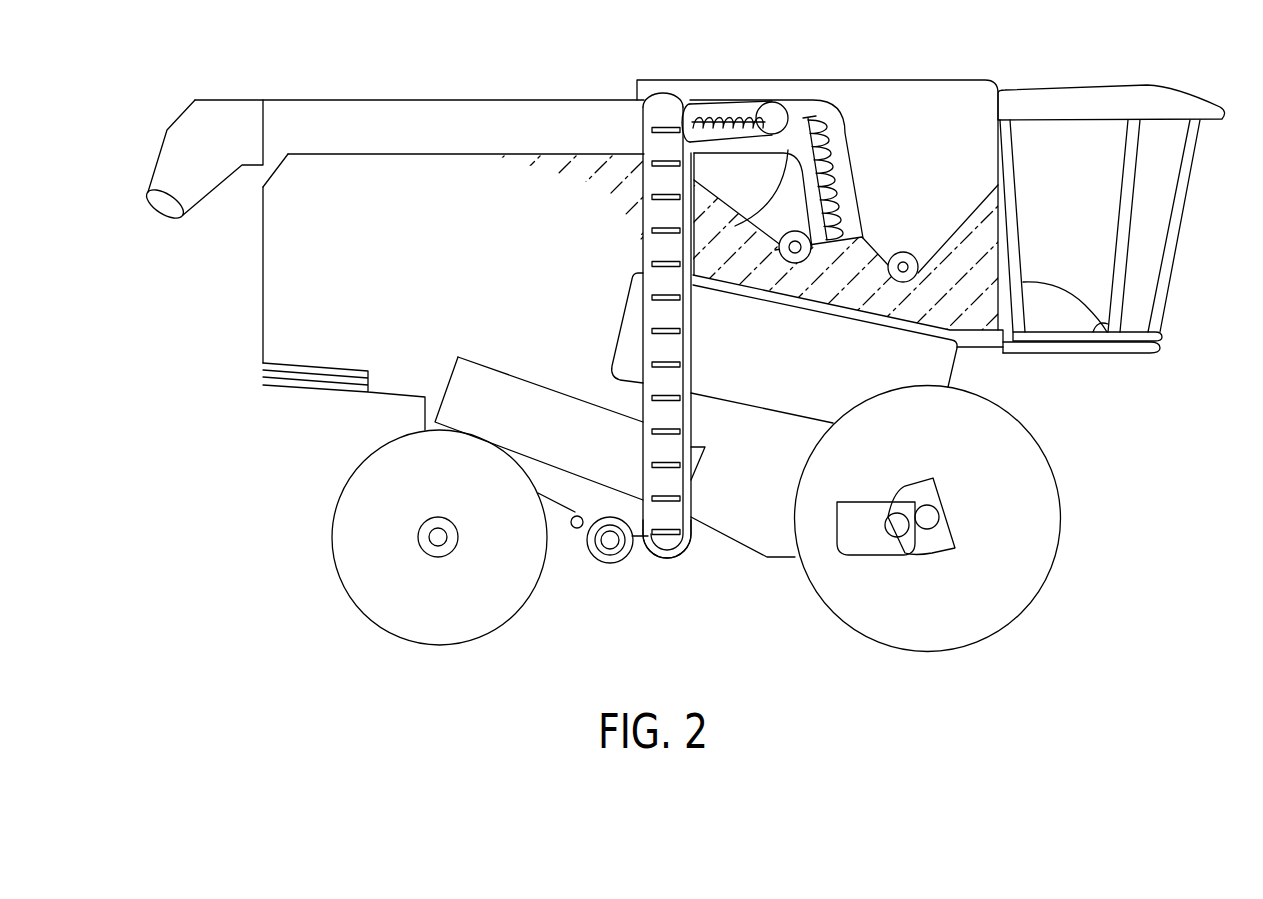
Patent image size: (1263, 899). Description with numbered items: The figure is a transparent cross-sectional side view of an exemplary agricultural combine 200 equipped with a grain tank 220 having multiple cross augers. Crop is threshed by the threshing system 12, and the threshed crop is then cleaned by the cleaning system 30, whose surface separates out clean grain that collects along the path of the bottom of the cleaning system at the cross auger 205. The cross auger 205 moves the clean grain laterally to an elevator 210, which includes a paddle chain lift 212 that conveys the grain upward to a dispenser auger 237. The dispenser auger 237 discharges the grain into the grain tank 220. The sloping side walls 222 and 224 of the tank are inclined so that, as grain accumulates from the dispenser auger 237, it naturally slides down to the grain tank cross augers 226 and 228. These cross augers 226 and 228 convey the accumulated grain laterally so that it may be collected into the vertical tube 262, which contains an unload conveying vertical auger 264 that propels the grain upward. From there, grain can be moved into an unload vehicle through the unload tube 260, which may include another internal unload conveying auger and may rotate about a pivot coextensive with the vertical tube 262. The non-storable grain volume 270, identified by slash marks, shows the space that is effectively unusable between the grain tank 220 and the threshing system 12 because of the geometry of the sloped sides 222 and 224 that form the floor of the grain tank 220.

The agricultural combine 200 is at (1040, 605).
The threshing system 12 is at (772, 392).
The cleaning system 30 is at (455, 408).
The cross auger 205 is at (687, 572).
The elevator 210 is at (643, 172).
The paddle chain lift 212 is at (668, 125).
The grain tank 220 is at (987, 165).
The sloping side wall 222 is at (788, 150).
The sloping side wall 224 is at (957, 228).
The grain tank cross auger 226 is at (797, 258).
The grain tank cross auger 228 is at (903, 252).
The dispenser auger 237 is at (737, 118).
The unload tube 260 is at (330, 120).
The vertical tube 262 is at (847, 143).
The unload conveying vertical auger 264 is at (813, 123).
The non-storable grain volume 270 is at (977, 317).